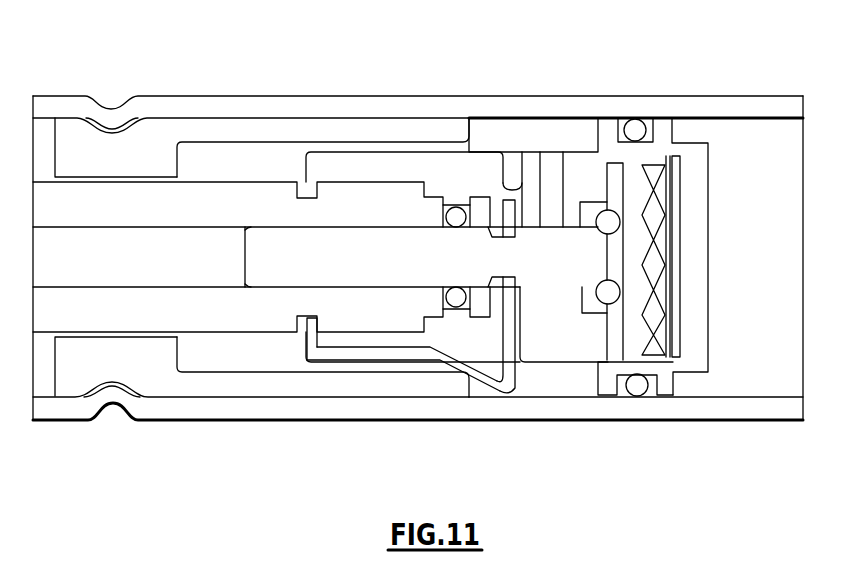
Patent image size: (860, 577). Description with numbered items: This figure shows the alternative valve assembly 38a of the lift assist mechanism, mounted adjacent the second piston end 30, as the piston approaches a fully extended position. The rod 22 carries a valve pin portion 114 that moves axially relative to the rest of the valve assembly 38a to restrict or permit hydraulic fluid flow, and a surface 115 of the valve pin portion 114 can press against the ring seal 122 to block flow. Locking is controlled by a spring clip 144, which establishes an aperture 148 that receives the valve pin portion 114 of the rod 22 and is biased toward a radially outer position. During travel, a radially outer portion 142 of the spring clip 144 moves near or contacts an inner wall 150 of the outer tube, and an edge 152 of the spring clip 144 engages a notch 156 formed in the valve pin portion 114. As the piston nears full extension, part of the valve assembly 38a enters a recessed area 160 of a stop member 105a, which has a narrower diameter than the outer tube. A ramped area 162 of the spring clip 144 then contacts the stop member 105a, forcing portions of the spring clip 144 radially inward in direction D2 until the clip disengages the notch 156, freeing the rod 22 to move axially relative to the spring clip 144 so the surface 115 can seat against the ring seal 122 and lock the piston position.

The valve assembly 38a is at (538, 82).
The second piston end 30 is at (766, 175).
The rod 22 is at (262, 202).
The valve pin portion 114 is at (448, 262).
The recessed area 160 is at (290, 150).
The stop member 105a is at (235, 388).
The notch 156 is at (493, 233).
The edge 152 is at (517, 217).
The aperture 148 is at (510, 284).
The radially outer portion 142 is at (505, 392).
The spring clip 144 is at (482, 378).
The ramped area 162 is at (440, 350).
The ring seal 122 is at (620, 219).
The surface 115 is at (612, 366).
The inner wall 150 is at (535, 396).
The direction D2 is at (507, 408).